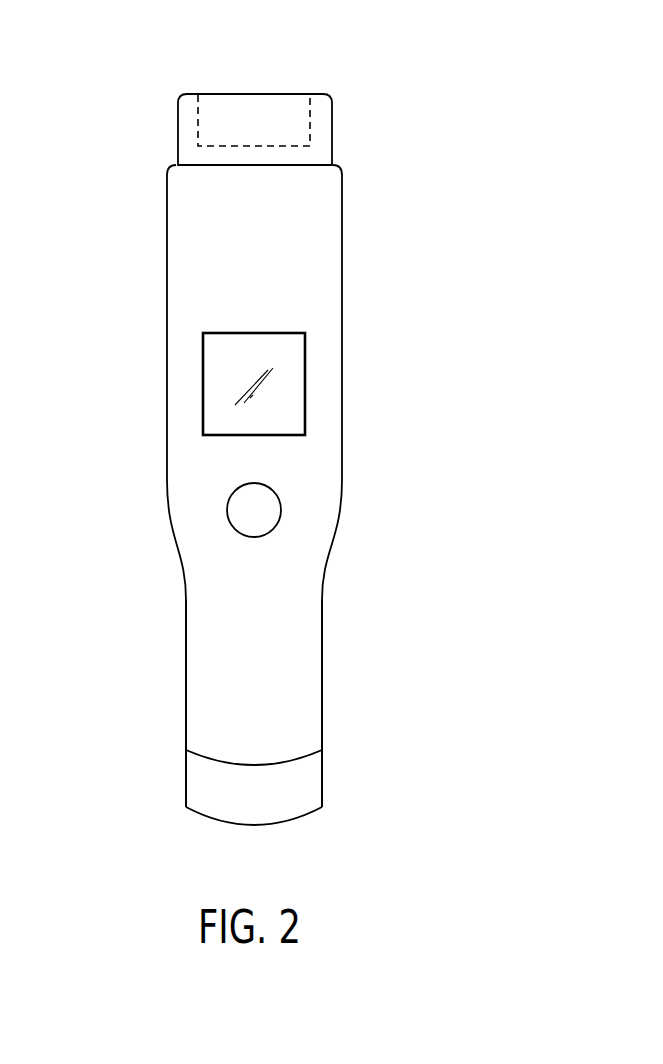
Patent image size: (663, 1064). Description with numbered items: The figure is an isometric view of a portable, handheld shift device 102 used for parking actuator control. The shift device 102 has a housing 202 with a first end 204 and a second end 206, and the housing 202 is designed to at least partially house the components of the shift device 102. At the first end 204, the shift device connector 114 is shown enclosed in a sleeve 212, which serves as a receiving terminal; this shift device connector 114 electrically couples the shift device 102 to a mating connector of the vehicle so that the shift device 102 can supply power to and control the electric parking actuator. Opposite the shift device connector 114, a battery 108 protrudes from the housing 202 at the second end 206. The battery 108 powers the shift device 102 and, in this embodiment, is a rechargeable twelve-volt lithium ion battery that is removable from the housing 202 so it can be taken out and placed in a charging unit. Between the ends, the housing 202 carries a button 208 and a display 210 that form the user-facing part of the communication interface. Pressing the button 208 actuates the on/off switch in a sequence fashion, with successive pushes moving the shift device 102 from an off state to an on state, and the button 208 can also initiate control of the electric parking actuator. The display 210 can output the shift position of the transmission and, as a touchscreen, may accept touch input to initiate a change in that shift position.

The shift device 102 is at (270, 424).
The battery 108 is at (300, 780).
The shift device connector 114 is at (249, 116).
The housing 202 is at (167, 272).
The first end 204 is at (241, 105).
The second end 206 is at (352, 701).
The button 208 is at (250, 512).
The display 210 is at (305, 377).
The sleeve 212 is at (322, 135).